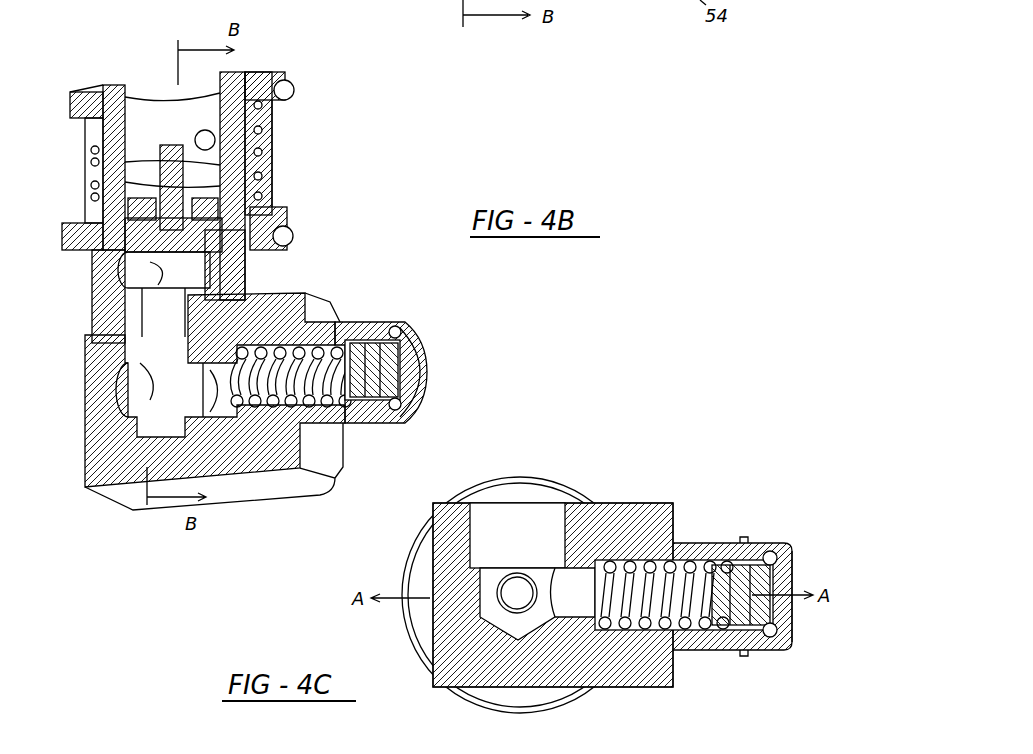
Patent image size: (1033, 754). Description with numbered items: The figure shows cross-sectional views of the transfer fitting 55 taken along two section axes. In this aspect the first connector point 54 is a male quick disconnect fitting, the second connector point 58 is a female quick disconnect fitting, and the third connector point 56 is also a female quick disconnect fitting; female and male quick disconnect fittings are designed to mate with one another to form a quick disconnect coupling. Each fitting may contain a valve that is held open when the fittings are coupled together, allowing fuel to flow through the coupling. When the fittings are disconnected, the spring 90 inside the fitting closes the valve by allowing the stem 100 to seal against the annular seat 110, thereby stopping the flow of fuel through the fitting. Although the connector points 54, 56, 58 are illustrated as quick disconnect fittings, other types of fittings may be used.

In FIG. 4B, the first connector point 54 is at (428, 371).
In FIG. 4C, the first connector point 54 is at (794, 623).
In FIG. 4B, the transfer fitting 55 is at (389, 182).
In FIG. 4C, the transfer fitting 55 is at (720, 491).
In FIG. 4B, the third connector point 56 is at (150, 413).
In FIG. 4C, the third connector point 56 is at (525, 528).
In FIG. 4B, the second connector point 58 is at (167, 116).
In FIG. 4C, the second connector point 58 is at (420, 558).
In FIG. 4B, the spring 90 is at (320, 372).
In FIG. 4C, the spring 90 is at (665, 622).
In FIG. 4B, the stem 100 is at (97, 190).
In FIG. 4C, the stem 100 is at (750, 607).
In FIG. 4B, the annular seat 110 is at (222, 190).
In FIG. 4C, the annular seat 110 is at (773, 555).